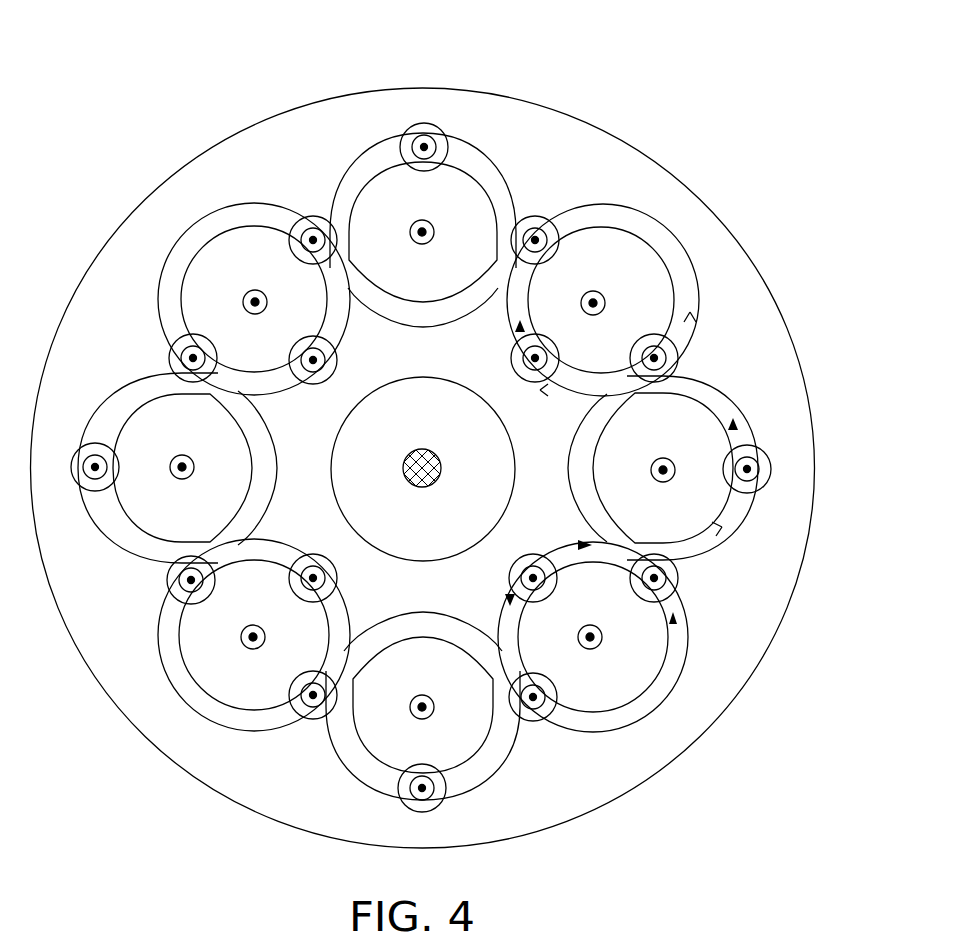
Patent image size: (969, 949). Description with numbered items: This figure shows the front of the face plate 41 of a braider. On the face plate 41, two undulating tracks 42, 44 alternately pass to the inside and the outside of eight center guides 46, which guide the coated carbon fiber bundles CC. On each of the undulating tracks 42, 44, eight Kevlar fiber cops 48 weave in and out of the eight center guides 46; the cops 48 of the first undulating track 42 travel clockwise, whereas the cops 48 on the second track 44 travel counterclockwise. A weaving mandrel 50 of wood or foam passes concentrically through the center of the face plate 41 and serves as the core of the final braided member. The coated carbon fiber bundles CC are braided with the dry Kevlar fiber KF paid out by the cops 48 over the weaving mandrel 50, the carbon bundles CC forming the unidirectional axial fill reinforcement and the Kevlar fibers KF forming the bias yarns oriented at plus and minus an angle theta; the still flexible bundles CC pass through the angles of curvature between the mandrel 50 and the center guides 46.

The face plate 41 is at (483, 92).
The first undulating track 42 is at (672, 243).
The second undulating track 44 is at (728, 396).
The center guides 46 is at (597, 634).
The Kevlar fiber cops 48 is at (540, 343).
The weaving mandrel 50 is at (433, 452).
The coated carbon fiber bundles CC is at (590, 303).
The dry Kevlar fiber KF is at (318, 695).